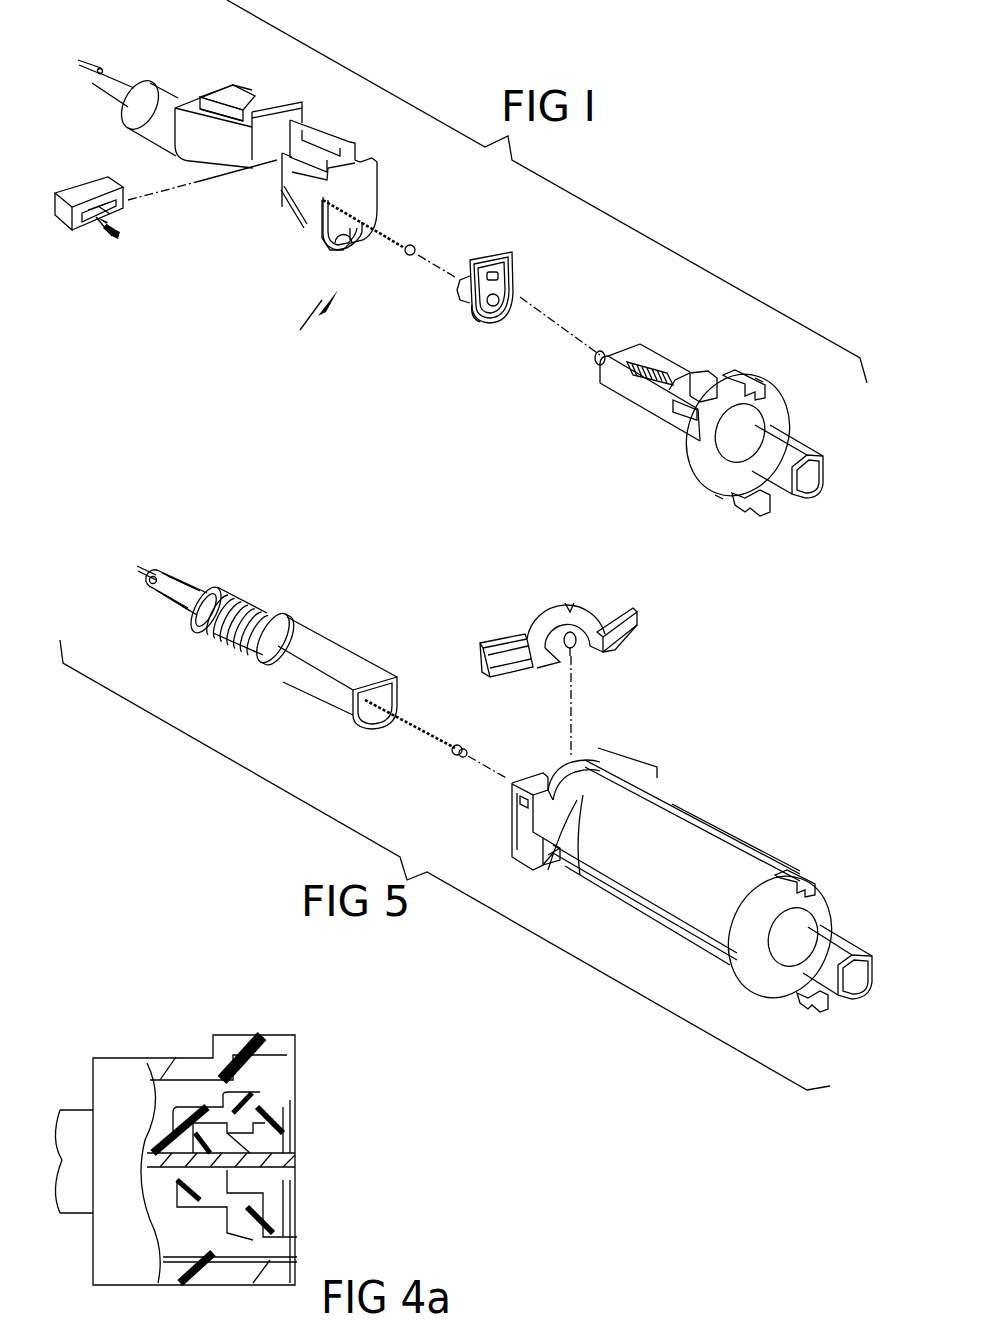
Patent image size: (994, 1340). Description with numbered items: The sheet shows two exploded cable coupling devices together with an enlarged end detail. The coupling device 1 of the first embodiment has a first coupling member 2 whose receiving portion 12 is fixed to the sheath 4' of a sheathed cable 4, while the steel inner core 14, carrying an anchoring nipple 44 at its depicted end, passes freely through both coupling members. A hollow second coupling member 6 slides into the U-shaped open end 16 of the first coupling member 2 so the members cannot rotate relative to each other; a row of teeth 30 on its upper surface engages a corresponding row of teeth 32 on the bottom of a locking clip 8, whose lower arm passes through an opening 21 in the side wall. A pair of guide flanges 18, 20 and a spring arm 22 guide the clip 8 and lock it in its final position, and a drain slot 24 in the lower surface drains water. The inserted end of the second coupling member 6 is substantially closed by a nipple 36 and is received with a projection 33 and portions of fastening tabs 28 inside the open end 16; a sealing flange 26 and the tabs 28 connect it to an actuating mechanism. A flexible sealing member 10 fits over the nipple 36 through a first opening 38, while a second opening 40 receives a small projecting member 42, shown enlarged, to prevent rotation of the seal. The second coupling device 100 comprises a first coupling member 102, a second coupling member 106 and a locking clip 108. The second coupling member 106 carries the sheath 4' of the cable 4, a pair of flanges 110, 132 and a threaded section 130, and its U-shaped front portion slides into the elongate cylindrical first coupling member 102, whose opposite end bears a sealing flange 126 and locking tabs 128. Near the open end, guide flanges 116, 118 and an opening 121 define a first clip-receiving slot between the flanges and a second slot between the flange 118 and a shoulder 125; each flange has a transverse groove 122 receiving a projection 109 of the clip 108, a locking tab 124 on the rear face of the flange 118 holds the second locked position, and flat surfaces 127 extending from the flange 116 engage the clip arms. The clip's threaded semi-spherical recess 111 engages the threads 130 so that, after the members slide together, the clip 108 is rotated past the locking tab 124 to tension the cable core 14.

In FIG. 1, the coupling device 1 is at (304, 322).
In FIG. 1, the first coupling member 2 is at (221, 181).
In FIG. 1, the sheathed cable 4 is at (106, 53).
In FIG. 5, the sheathed cable 4 is at (166, 551).
In FIG. 1, the sheath 4' is at (149, 85).
In FIG. 5, the sheath 4' is at (194, 559).
In FIG. 1, the second coupling member 6 is at (638, 418).
In FIG. 1, the locking clip 8 is at (118, 238).
In FIG. 1, the sealing member 10 is at (480, 325).
In FIG. 1, the receiving portion 12 is at (174, 106).
In FIG. 1, the inner core 14 is at (383, 233).
In FIG. 5, the inner core 14 is at (412, 726).
In FIG. 1, the open end 16 is at (377, 188).
In FIG. 1, the guide flange 18 is at (258, 110).
In FIG. 1, the guide flange 20 is at (290, 211).
In FIG. 1, the opening 21 is at (272, 160).
In FIG. 1, the spring arm 22 is at (315, 123).
In FIG. 1, the drain slot 24 is at (346, 238).
In FIG. 1, the sealing flange 26 is at (775, 407).
In FIG. 1, the fastening tabs 28 is at (755, 375).
In FIG. 1, the row of teeth 30 is at (650, 356).
In FIG. 1, the row of teeth 32 is at (50, 200).
In FIG. 1, the projection 33 is at (690, 374).
In FIG. 1, the nipple 36 is at (597, 365).
In FIG. 1, the first opening 38 is at (495, 300).
In FIG. 1, the second opening 40 is at (507, 258).
In FIG. 4a, the projecting member 42 is at (252, 1108).
In FIG. 1, the anchoring nipple 44 is at (420, 248).
In FIG. 5, the second coupling device 100 is at (452, 618).
In FIG. 5, the first coupling member 102 is at (673, 891).
In FIG. 5, the second coupling member 106 is at (335, 637).
In FIG. 5, the locking clip 108 is at (584, 601).
In FIG. 5, the projection 109 is at (640, 632).
In FIG. 5, the rear guide flange 110 is at (225, 583).
In FIG. 5, the semi-spherical recess 111 is at (575, 651).
In FIG. 5, the guide flange 116 is at (620, 752).
In FIG. 5, the guide flange 118 is at (620, 761).
In FIG. 5, the opening 121 is at (553, 780).
In FIG. 5, the groove 122 is at (520, 798).
In FIG. 5, the locking tab 124 is at (553, 868).
In FIG. 5, the shoulder 125 is at (583, 874).
In FIG. 5, the sealing flange 126 is at (830, 911).
In FIG. 5, the flat surfaces 127 is at (530, 846).
In FIG. 5, the locking tabs 128 is at (815, 887).
In FIG. 5, the threaded section 130 is at (250, 596).
In FIG. 5, the flange 132 is at (290, 614).